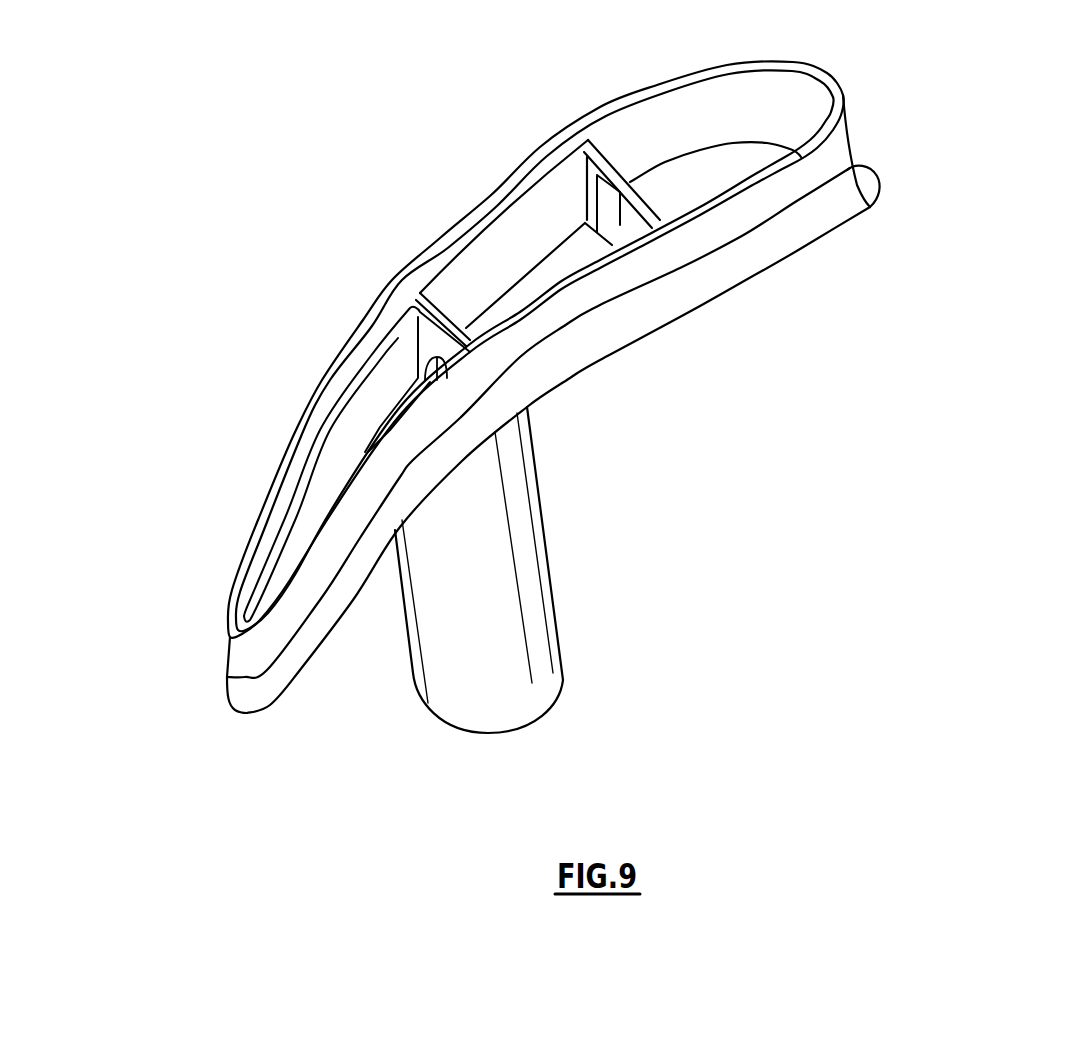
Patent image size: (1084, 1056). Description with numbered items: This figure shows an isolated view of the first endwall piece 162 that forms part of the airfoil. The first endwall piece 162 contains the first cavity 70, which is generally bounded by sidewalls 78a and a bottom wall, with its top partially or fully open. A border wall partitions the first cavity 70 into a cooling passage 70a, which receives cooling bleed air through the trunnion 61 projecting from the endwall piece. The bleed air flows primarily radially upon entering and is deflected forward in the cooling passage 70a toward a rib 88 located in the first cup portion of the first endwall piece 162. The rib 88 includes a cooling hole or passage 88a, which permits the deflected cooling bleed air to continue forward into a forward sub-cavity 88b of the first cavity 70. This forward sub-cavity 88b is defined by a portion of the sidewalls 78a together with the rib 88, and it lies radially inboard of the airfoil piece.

The first endwall piece 162 is at (501, 370).
The first cavity 70 is at (737, 107).
The cooling passage 70a is at (556, 267).
The rib 88 is at (614, 165).
The cooling hole or passage 88a is at (613, 218).
The forward sub-cavity 88b is at (735, 170).
The sidewalls 78a is at (833, 158).
The trunnion 61 is at (540, 643).